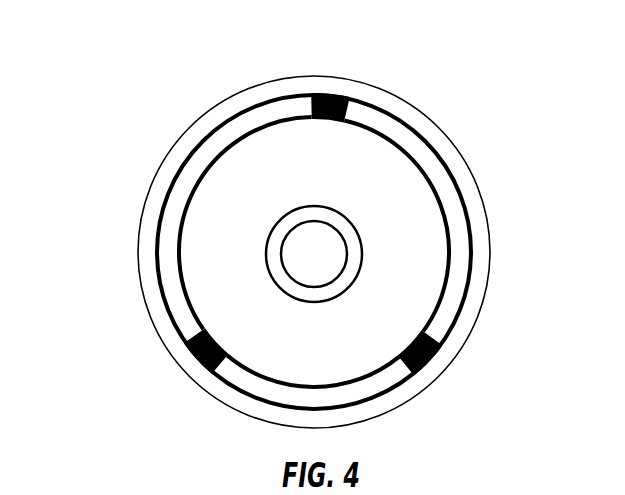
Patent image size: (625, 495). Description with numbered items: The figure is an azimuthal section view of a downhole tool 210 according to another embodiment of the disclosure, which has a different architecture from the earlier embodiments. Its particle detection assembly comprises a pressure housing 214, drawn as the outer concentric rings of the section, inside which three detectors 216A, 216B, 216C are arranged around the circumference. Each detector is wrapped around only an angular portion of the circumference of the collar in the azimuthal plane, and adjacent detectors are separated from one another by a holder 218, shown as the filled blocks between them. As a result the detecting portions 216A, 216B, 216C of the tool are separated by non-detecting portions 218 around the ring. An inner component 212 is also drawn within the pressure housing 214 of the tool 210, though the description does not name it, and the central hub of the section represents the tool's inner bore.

The downhole tool 210 is at (166, 92).
The sealing element 212 is at (282, 92).
The pressure housing 214 is at (440, 152).
The detector 216A is at (460, 299).
The detector 216B is at (386, 394).
The detector 216C is at (162, 237).
The holder 218 is at (333, 98).